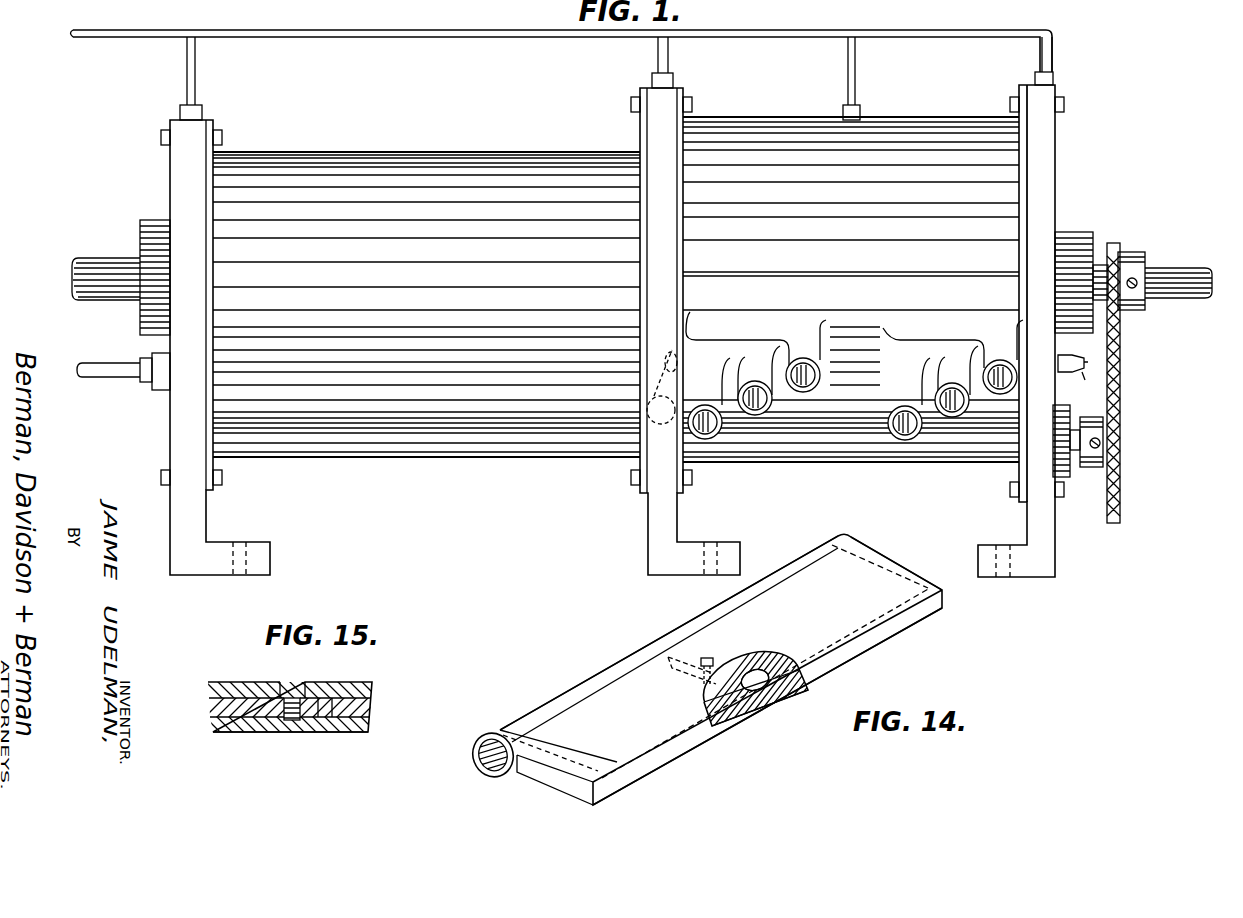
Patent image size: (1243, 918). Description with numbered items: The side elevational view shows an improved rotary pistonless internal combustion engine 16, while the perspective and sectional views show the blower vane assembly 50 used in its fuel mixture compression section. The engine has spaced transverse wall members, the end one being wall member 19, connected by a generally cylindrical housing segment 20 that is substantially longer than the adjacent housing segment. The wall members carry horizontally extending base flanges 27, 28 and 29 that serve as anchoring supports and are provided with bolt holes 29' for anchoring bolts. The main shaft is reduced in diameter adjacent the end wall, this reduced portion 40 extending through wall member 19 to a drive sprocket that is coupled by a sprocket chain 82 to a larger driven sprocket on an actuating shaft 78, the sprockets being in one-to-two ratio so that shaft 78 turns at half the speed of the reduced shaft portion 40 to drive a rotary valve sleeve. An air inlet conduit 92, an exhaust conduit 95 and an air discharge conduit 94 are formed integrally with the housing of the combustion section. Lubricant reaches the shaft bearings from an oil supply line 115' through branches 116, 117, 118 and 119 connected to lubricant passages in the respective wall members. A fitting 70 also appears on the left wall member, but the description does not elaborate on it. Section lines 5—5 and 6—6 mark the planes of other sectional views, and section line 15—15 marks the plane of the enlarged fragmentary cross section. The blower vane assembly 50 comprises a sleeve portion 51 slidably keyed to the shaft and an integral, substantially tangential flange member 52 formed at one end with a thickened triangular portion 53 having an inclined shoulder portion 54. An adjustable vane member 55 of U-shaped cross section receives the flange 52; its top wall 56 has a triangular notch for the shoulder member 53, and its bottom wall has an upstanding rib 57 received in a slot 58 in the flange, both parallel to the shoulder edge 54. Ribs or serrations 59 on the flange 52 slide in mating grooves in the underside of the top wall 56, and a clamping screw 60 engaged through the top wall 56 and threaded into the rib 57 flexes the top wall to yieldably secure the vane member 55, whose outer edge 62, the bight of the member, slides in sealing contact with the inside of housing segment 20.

In FIG. 1, the oil supply line 115' is at (562, 51).
In FIG. 1, the branch 116 is at (197, 78).
In FIG. 1, the branch 117 is at (669, 60).
In FIG. 1, the branch 118 is at (857, 70).
In FIG. 1, the branch 119 is at (1050, 56).
In FIG. 1, the rotary internal combustion engine 16 is at (1075, 142).
In FIG. 1, the wall section 19 is at (1048, 193).
In FIG. 1, the cylindrical housing segment 20 is at (492, 165).
In FIG. 1, the base flange 27 is at (219, 576).
In FIG. 1, the base flange 28 is at (684, 570).
In FIG. 1, the base flange 29 is at (1021, 350).
In FIG. 1, the bolt holes 29' is at (728, 536).
In FIG. 1, the reduced shaft portion 40 is at (1172, 270).
In FIG. 1, the fluid inlet fitting 70 is at (118, 366).
In FIG. 1, the actuating shaft 78 is at (1068, 480).
In FIG. 1, the sprocket chain 82 is at (1122, 362).
In FIG. 1, the air inlet conduit 92 is at (883, 412).
In FIG. 1, the air discharge conduit 94 is at (1005, 352).
In FIG. 1, the exhaust conduit 95 is at (953, 366).
In FIG. 1, the section line 5- 5 is at (292, 133).
In FIG. 1, the section line 6- 6 is at (997, 105).
In FIG. 14, the section line 15— 15 is at (720, 654).
In FIG. 14, the blower vane assembly 50 is at (618, 655).
In FIG. 14, the sleeve portion 51 is at (509, 777).
In FIG. 14, the flange member 52 is at (718, 722).
In FIG. 15, the flange member 52 is at (370, 713).
In FIG. 14, the thickened triangular portion 53 is at (578, 766).
In FIG. 14, the inclined shoulder portion 54 is at (560, 748).
In FIG. 14, the adjustable vane member 55 is at (900, 566).
In FIG. 15, the adjustable vane member 55 is at (222, 734).
In FIG. 14, the top wall 56 is at (858, 604).
In FIG. 15, the top wall 56 is at (350, 688).
In FIG. 14, the upstanding rib 57 is at (770, 712).
In FIG. 15, the upstanding rib 57 is at (282, 735).
In FIG. 14, the slot 58 is at (748, 712).
In FIG. 15, the slot 58 is at (308, 722).
In FIG. 14, the ribs or serrations 59 is at (775, 668).
In FIG. 15, the ribs or serrations 59 is at (332, 718).
In FIG. 14, the clamping screw 60 is at (712, 660).
In FIG. 15, the clamping screw 60 is at (299, 692).
In FIG. 14, the outer edge 62 is at (865, 648).